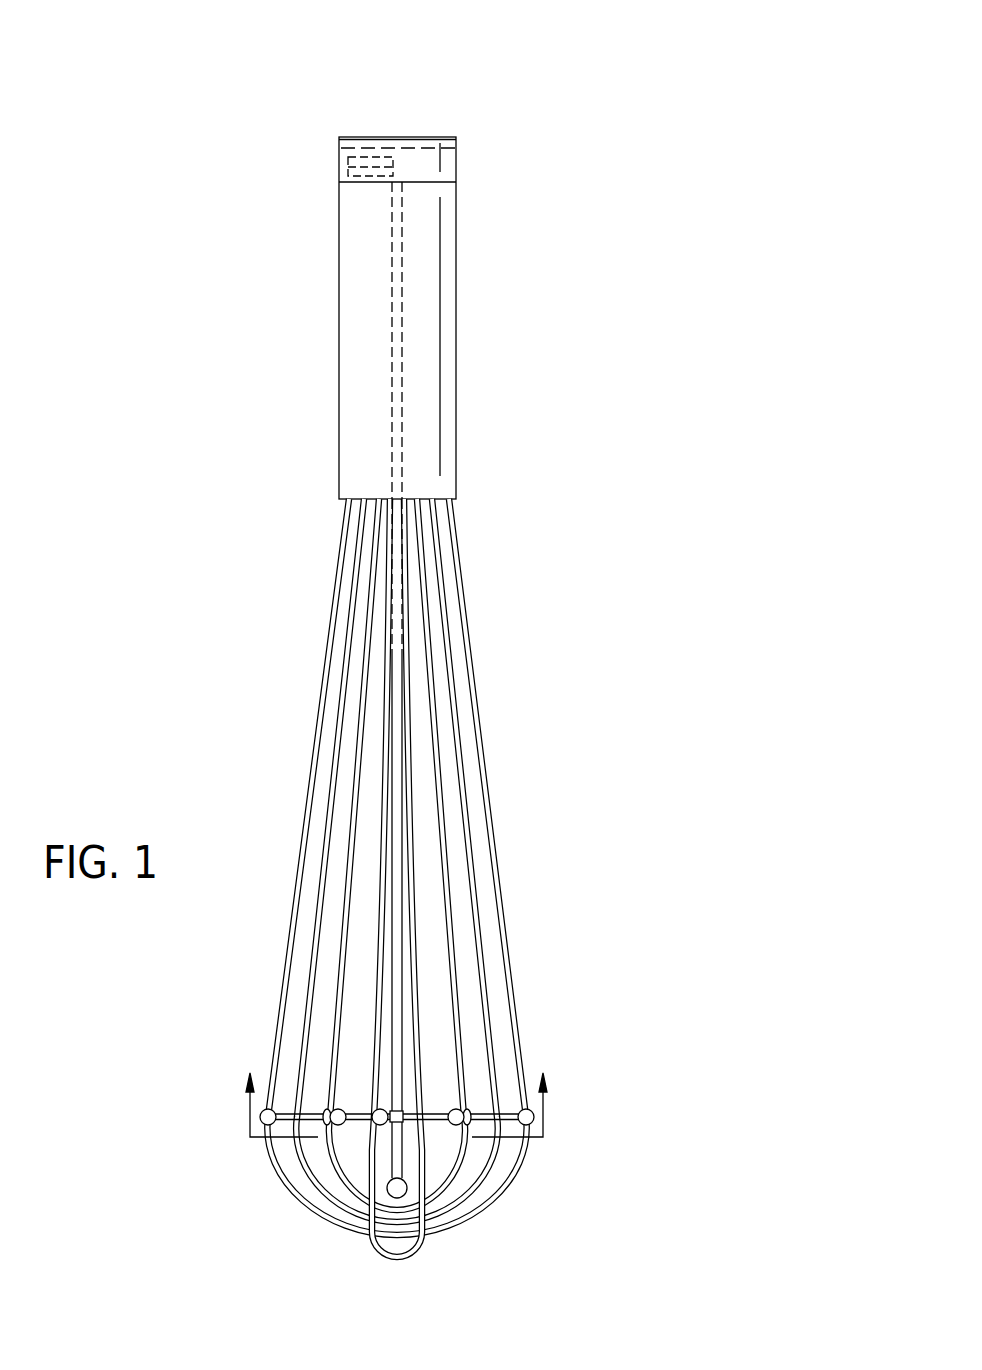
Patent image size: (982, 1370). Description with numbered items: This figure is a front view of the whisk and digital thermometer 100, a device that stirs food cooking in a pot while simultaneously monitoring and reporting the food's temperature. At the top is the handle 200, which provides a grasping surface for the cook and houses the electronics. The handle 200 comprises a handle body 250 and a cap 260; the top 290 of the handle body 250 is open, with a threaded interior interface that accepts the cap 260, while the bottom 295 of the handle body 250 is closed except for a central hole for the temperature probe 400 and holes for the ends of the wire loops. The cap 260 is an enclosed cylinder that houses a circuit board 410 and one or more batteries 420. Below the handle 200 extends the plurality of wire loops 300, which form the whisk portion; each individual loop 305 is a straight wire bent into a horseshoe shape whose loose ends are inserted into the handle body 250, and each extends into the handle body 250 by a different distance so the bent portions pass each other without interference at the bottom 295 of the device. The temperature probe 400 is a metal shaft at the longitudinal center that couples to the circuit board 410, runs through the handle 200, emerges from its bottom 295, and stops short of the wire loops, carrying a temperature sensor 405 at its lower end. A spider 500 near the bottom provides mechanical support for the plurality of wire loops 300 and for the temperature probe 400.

The whisk and digital thermometer 100 is at (700, 221).
The handle 200 is at (218, 144).
The handle body 250 is at (507, 183).
The cap 260 is at (507, 135).
The top 290 is at (399, 104).
The bottom 295 is at (513, 1211).
The plurality of wire loops 300 is at (383, 686).
The individual loop 305 is at (509, 968).
The temperature probe 400 is at (401, 915).
The temperature sensor 405 is at (405, 1182).
The circuit board 410 is at (339, 150).
The batteries 420 is at (348, 171).
The spider 500 is at (482, 1112).